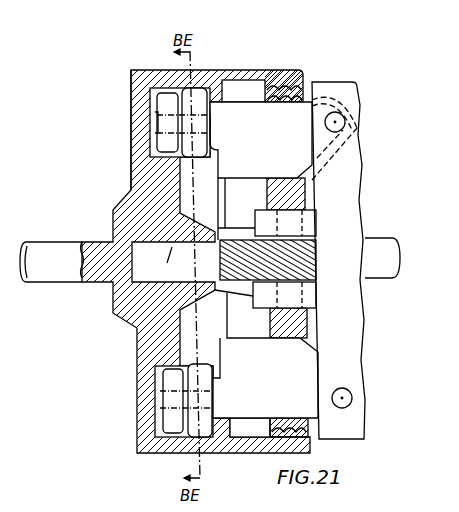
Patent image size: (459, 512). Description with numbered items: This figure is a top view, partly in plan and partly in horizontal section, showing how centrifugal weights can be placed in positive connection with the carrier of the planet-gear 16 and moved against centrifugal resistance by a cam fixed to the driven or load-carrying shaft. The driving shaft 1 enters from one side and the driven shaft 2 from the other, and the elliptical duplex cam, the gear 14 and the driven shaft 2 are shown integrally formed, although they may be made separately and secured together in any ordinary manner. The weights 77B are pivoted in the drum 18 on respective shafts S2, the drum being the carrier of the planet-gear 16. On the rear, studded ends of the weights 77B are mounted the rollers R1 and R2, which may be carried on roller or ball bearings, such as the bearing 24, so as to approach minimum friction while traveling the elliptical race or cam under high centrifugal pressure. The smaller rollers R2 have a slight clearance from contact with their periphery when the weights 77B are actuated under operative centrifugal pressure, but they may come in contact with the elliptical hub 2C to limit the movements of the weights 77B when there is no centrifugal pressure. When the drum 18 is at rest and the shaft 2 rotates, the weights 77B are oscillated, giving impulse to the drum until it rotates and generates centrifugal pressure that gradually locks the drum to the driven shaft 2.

The driving shaft 1 is at (391, 242).
The driven shaft 2 is at (56, 226).
The gear 14 is at (314, 230).
The planet-gear 16 is at (268, 234).
The drum 18 is at (363, 238).
The bearing 24 is at (302, 258).
The weights 77B is at (263, 226).
The roller R1 is at (261, 171).
The smaller rollers R2 is at (149, 261).
The shafts S2 is at (366, 260).
The elliptical hub 2C is at (250, 354).